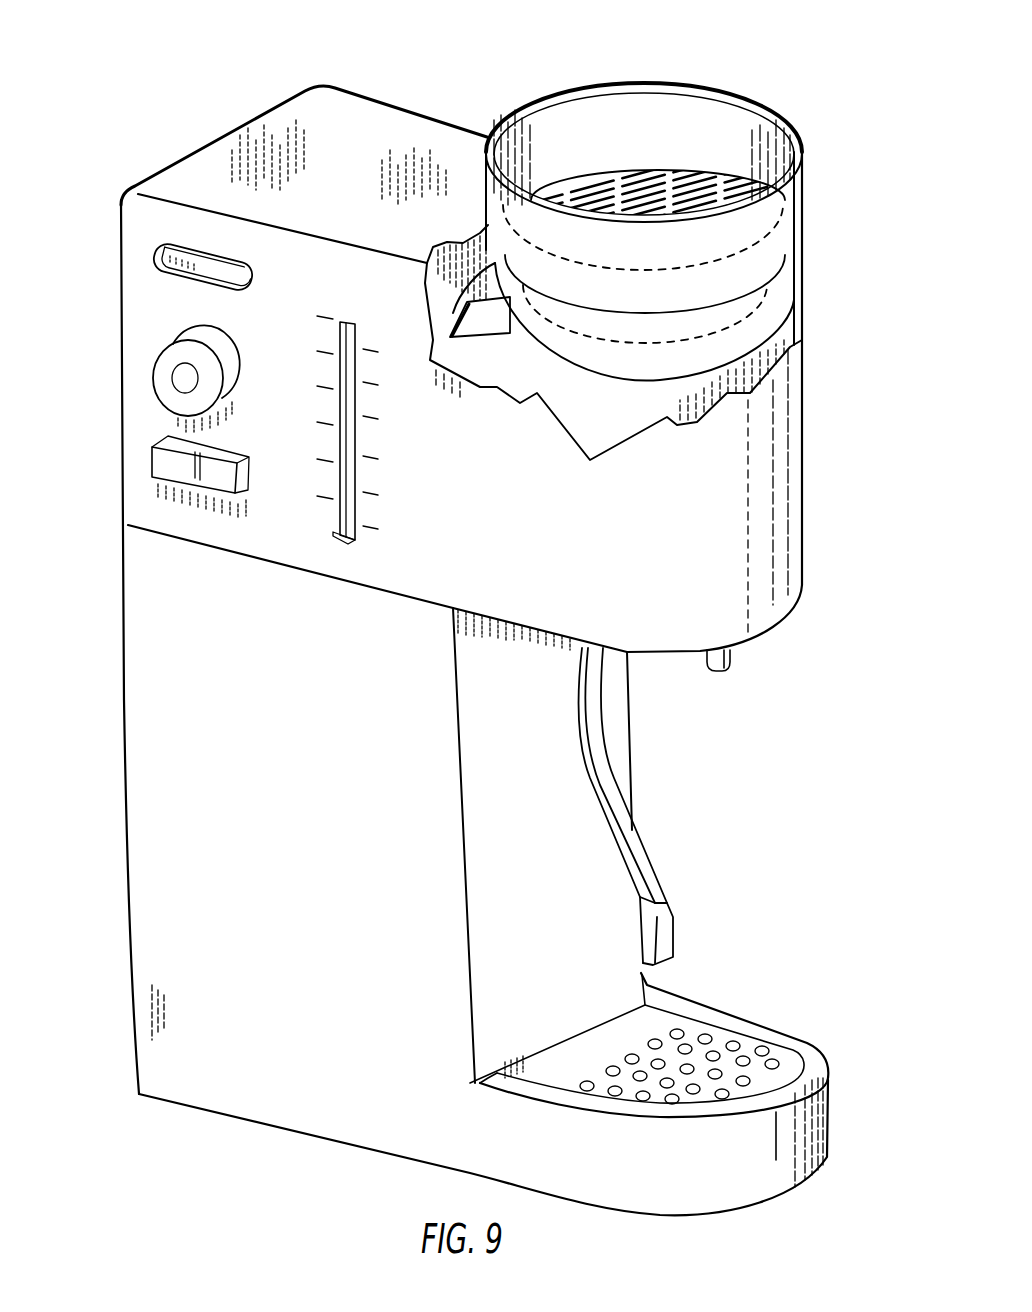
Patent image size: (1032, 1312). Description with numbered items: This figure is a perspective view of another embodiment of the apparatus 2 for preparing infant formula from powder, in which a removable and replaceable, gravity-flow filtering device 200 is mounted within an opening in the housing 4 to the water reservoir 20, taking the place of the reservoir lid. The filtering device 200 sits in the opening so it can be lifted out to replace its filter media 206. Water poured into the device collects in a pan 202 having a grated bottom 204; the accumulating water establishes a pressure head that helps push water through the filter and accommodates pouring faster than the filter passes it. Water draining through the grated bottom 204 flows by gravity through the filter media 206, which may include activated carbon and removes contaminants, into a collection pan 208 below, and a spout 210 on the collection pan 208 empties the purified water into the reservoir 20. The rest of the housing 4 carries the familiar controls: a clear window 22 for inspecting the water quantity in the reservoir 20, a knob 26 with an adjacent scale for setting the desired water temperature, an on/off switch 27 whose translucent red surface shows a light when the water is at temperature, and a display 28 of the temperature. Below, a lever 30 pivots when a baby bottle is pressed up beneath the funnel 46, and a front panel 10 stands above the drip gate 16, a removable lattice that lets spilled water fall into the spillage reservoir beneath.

The apparatus 2 is at (475, 70).
The housing 4 is at (121, 522).
The front panel 10 is at (567, 906).
The drip gate 16 is at (722, 1050).
The water reservoir 20 is at (620, 427).
The clear window 22 is at (357, 433).
The knob 26 is at (172, 362).
The on/off switch 27 is at (152, 447).
The display 28 is at (155, 250).
The lever 30 is at (665, 884).
The funnel 46 is at (728, 672).
The filtering device 200 is at (812, 208).
The pan 202 is at (795, 125).
The grated bottom 204 is at (683, 170).
The filter media 206 is at (760, 300).
The filter bottom 208 is at (777, 325).
The spout 210 is at (470, 338).